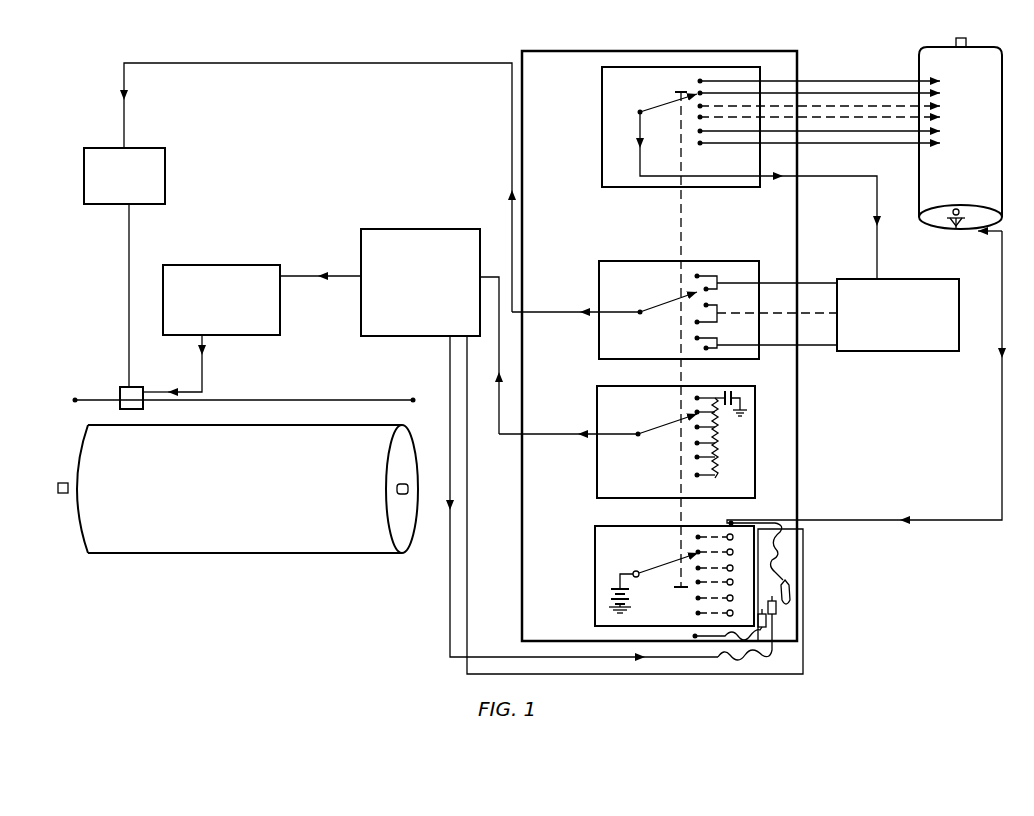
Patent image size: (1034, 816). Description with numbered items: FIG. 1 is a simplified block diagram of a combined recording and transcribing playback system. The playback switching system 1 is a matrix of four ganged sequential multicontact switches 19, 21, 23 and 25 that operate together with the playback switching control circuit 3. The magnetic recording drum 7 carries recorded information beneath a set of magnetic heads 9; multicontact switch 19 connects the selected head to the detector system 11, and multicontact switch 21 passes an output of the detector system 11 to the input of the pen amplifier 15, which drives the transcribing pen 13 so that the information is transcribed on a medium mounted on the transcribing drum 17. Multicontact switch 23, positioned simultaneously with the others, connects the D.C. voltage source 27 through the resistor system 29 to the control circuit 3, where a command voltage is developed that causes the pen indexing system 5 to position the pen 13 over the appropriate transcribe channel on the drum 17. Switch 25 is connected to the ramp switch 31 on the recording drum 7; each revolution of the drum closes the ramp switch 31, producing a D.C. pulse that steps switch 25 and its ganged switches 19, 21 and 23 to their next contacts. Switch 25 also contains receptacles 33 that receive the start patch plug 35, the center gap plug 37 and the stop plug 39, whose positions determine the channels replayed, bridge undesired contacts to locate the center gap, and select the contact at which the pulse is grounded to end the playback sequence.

The playback switching system 1 is at (760, 52).
The playback switching control circuit 3 is at (395, 229).
The pen indexing system 5 is at (200, 265).
The magnetic recording drum 7 is at (1002, 130).
The magnetic heads 9 is at (942, 82).
The detector system 11 is at (959, 312).
The transcribing pen 13 is at (121, 436).
The pen amplifier 15 is at (165, 172).
The transcribing drum 17 is at (75, 543).
The multicontact switch 19 is at (602, 128).
The multicontact switch 21 is at (599, 286).
The multicontact switch 23 is at (642, 442).
The switch 25 is at (683, 576).
The voltage source 27 is at (748, 412).
The resistor system 29 is at (720, 420).
The ramp switch 31 is at (962, 235).
The receptacles 33 is at (733, 553).
The start patch plug 35 is at (790, 592).
The center gap plug 37 is at (770, 601).
The stop plug 39 is at (766, 622).